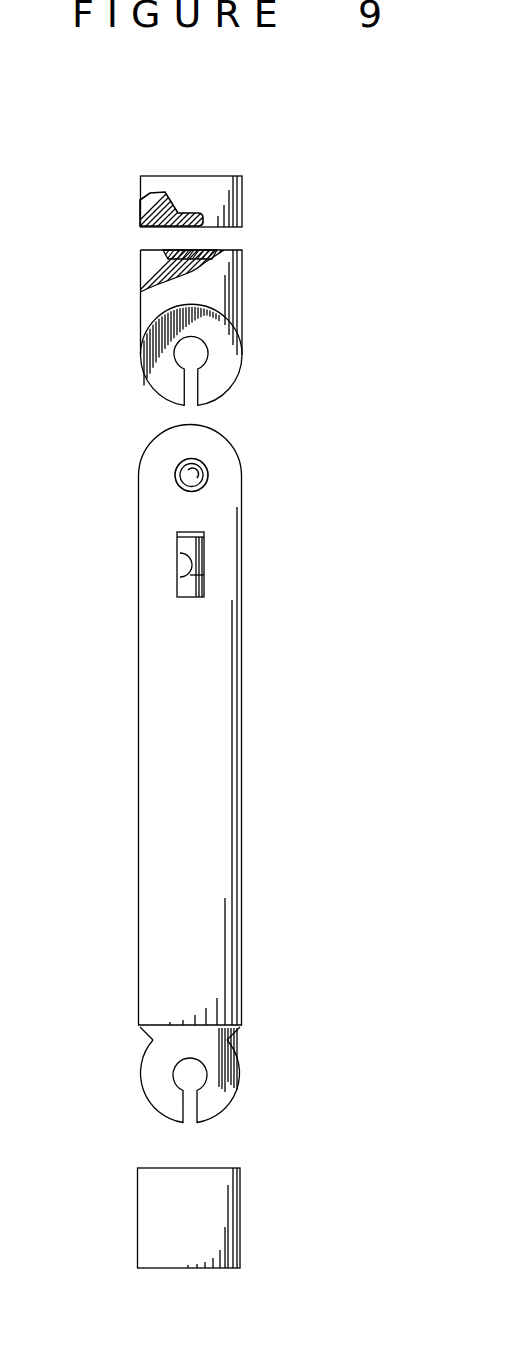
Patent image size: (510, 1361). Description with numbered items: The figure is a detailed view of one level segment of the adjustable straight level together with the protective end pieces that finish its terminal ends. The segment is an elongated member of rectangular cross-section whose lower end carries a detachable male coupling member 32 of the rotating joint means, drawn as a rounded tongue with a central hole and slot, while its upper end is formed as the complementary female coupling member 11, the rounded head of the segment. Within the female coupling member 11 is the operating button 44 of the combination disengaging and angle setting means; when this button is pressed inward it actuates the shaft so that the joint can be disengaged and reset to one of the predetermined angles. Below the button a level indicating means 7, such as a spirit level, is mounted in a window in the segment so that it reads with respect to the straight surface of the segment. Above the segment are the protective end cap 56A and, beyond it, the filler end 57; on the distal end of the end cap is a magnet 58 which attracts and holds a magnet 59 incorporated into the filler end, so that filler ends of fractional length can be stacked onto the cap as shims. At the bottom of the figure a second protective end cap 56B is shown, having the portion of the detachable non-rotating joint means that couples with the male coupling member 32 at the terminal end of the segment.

The level indicating means 7 is at (180, 565).
The female coupling member 11 is at (242, 472).
The male coupling member 32 is at (152, 1060).
The operating button 44 is at (178, 475).
The protective end cap 56A is at (191, 327).
The protective end cap 56B is at (189, 1218).
The filler end 57 is at (192, 201).
The magnet 58 is at (196, 248).
The magnet 59 is at (180, 230).